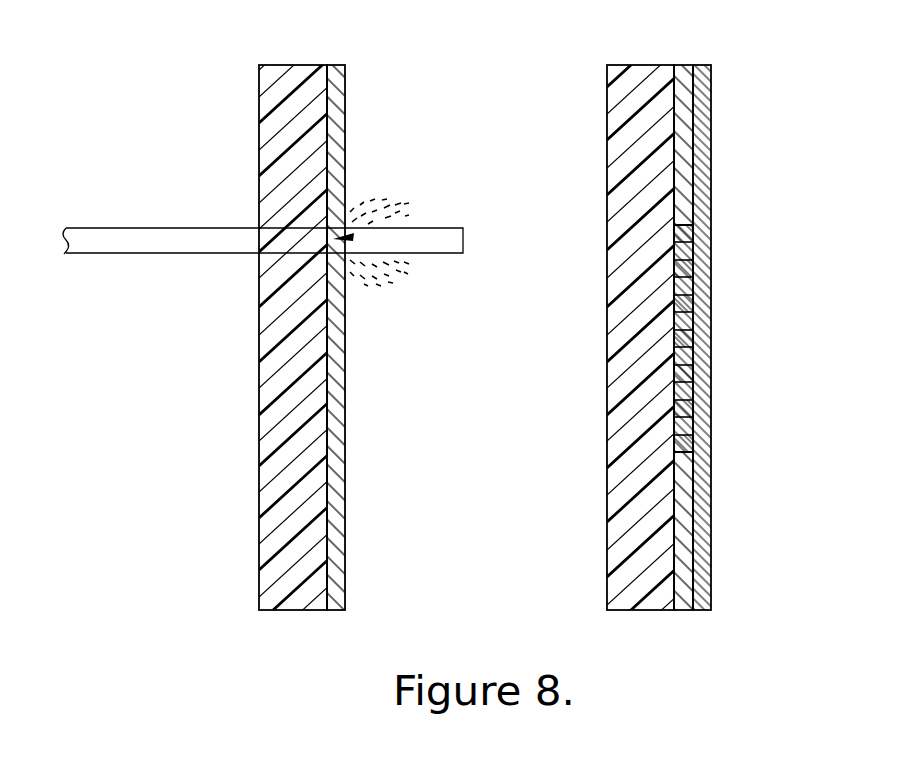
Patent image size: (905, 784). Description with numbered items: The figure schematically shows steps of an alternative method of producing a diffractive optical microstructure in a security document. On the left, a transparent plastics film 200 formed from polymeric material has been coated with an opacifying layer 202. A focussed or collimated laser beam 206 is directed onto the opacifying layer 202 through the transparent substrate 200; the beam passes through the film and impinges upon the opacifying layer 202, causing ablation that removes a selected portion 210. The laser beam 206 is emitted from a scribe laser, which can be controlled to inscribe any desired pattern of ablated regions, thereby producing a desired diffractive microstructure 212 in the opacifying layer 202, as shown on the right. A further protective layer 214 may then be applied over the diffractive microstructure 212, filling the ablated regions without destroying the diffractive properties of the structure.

The transparent plastics film 200 is at (290, 72).
The opacifying layer 202 is at (346, 68).
The laser beam 206 is at (200, 238).
The selected portion 210 is at (362, 232).
The diffractive microstructure 212 is at (683, 220).
The protective layer 214 is at (712, 78).